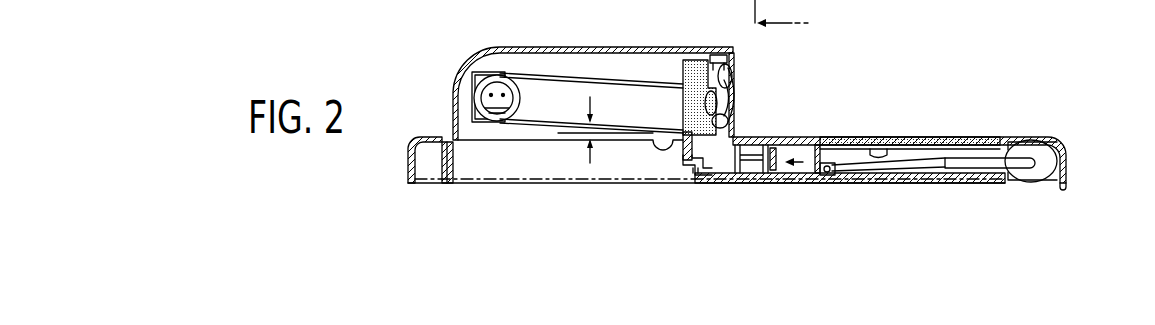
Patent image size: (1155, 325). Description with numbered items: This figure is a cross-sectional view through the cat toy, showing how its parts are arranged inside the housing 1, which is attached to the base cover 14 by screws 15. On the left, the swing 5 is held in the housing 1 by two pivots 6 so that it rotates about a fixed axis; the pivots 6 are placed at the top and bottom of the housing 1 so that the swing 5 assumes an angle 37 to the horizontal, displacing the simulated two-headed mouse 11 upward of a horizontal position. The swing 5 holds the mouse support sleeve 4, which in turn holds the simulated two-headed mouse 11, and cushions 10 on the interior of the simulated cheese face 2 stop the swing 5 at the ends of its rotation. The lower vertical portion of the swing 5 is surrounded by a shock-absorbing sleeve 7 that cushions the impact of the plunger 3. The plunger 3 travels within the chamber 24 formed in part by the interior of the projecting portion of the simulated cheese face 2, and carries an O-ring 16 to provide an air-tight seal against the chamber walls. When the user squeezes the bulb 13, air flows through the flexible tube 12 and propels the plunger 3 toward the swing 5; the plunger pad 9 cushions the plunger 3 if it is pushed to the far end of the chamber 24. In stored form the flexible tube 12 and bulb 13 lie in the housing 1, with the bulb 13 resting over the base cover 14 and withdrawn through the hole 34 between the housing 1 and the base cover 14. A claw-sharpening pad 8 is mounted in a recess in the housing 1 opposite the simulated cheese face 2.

The housing 1 is at (1067, 160).
The simulated cheese face 2 is at (728, 58).
The plunger 3 is at (786, 158).
The mouse support sleeve 4 is at (521, 106).
The swing 5 is at (590, 77).
The pivots 6 is at (738, 137).
The shock-absorbing sleeve 7 is at (678, 150).
The claw-sharpening pad 8 is at (954, 137).
The plunger pad 9 is at (822, 185).
The cushions 10 is at (683, 60).
The simulated two-headed mouse 11 is at (495, 78).
The flexible tube 12 is at (905, 164).
The bulb 13 is at (1050, 145).
The base cover 14 is at (987, 162).
The screws 15 is at (452, 140).
The O-ring 16 is at (773, 152).
The chamber 24 is at (818, 170).
The hole 34 is at (1068, 188).
The angle 37 is at (595, 98).